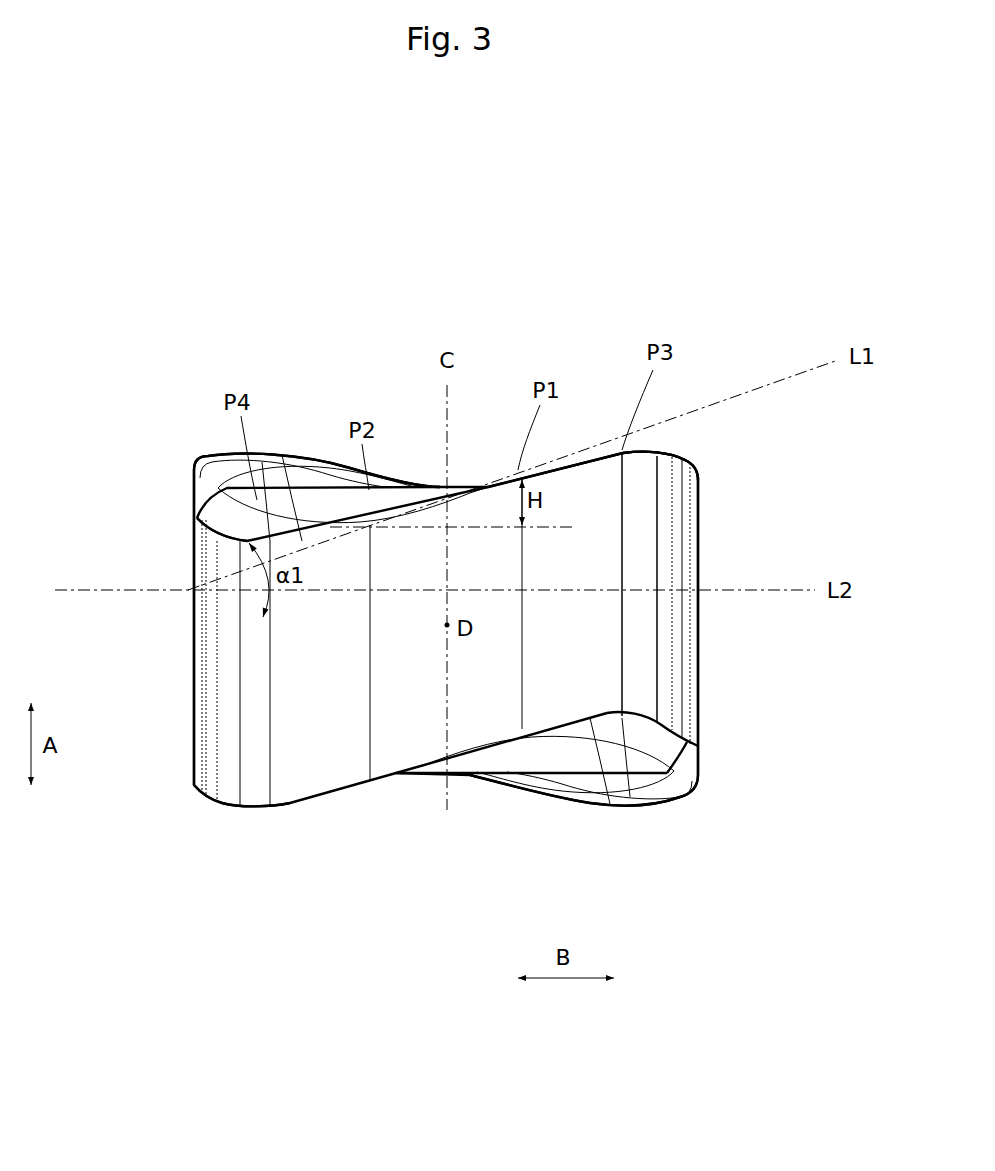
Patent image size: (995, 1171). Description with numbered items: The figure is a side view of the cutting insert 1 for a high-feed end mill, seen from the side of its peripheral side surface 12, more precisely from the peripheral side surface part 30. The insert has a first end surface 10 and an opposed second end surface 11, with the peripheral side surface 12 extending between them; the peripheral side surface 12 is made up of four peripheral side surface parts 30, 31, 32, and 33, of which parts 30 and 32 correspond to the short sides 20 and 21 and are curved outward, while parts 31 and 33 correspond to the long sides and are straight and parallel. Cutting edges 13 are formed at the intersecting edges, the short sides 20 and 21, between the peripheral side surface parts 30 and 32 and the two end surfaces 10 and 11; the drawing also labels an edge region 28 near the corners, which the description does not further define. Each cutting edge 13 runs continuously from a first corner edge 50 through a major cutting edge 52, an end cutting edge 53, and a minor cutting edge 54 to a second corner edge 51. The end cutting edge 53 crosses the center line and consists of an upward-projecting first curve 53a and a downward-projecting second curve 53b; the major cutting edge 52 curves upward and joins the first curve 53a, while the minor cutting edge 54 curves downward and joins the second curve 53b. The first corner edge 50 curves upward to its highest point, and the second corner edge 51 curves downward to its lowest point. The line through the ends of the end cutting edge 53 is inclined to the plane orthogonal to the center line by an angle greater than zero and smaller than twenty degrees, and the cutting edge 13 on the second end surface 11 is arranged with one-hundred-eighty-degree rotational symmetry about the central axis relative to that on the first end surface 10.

The cutting insert 1 is at (470, 348).
The first end surface 10 is at (660, 429).
The second end surface 11 is at (353, 810).
The peripheral side surface 12 is at (700, 716).
The cutting edge 13 is at (557, 461).
The short side 20 is at (308, 512).
The short side 21 is at (222, 529).
The rim 28 is at (200, 490).
The peripheral side surface part 30 is at (669, 665).
The peripheral side surface part 31 is at (192, 698).
The peripheral side surface part 32 is at (639, 587).
The peripheral side surface part 33 is at (698, 540).
The first corner edge 50 is at (690, 452).
The second corner edge 51 is at (207, 538).
The major cutting edge 52 is at (584, 454).
The end cutting edge 53 is at (473, 484).
The first curve 53a is at (495, 478).
The second curve 53b is at (418, 485).
The minor cutting edge 54 is at (335, 505).